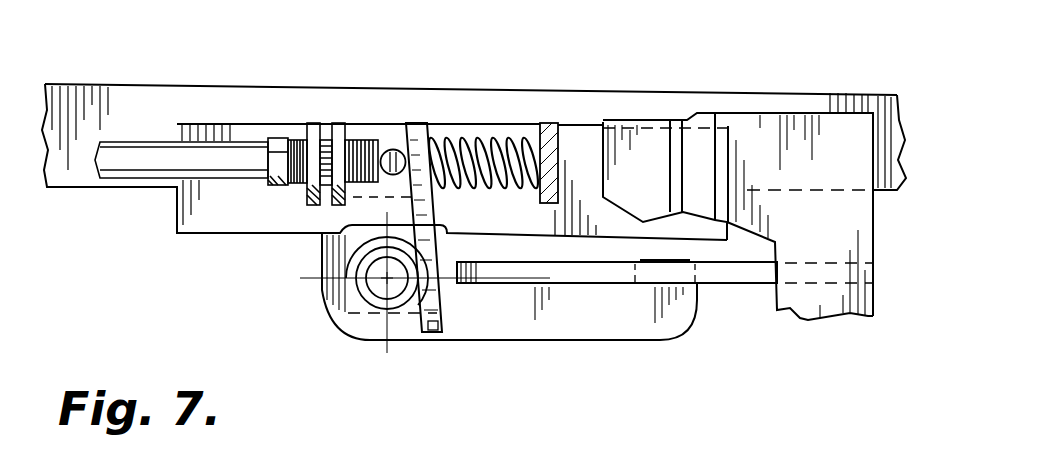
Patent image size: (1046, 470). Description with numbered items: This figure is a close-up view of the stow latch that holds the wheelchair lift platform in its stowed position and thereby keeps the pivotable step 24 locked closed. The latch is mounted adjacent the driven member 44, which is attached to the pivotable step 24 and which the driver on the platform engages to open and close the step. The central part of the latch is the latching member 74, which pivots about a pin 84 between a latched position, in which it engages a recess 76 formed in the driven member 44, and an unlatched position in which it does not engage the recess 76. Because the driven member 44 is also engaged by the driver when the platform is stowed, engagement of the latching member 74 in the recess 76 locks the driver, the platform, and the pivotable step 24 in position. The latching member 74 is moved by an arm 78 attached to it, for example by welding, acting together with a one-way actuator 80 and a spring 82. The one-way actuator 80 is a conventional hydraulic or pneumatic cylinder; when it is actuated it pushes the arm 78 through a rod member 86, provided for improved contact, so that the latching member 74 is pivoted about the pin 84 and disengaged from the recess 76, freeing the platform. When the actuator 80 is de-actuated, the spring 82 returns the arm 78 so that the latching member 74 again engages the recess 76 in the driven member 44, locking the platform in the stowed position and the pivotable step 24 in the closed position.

The pivotable step 24 is at (798, 170).
The driven member 44 is at (752, 277).
The latching member 74 is at (553, 342).
The recess 76 is at (700, 284).
The arm 78 is at (428, 338).
The one-way actuator 80 is at (322, 123).
The spring 82 is at (480, 125).
The pin 84 is at (360, 300).
The rod member 86 is at (389, 150).